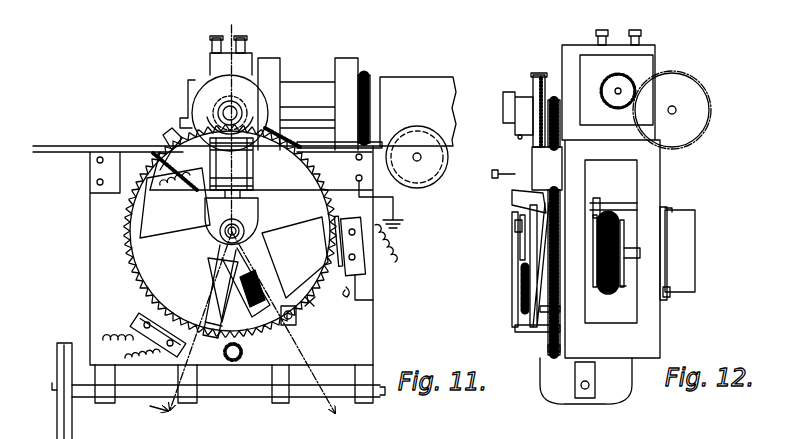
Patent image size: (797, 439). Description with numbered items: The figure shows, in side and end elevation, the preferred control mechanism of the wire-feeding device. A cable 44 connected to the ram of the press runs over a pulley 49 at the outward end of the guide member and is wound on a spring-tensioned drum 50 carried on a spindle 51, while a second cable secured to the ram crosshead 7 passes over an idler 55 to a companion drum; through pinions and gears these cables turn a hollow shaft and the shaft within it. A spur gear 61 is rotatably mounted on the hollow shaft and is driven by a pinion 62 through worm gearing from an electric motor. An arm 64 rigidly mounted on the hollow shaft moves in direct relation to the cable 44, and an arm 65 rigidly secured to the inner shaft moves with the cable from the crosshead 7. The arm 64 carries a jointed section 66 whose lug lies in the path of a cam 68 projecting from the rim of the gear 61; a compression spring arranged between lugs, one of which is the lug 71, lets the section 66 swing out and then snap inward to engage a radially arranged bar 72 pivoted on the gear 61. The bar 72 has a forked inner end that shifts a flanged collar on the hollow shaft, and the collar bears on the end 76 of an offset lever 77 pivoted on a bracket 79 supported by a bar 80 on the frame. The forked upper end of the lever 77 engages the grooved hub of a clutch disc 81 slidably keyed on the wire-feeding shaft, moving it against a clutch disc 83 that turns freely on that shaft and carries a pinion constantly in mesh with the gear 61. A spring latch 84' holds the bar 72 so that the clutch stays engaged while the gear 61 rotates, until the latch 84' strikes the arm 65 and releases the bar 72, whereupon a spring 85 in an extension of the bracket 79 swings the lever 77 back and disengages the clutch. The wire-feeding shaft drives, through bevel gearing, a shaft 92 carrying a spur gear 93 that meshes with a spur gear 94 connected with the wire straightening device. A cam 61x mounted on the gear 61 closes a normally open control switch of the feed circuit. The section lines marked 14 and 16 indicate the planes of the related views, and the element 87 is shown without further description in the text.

In FIG. 11, the ram crosshead 7 is at (144, 330).
In FIG. 11, the section line 14 is at (234, 33).
In FIG. 11, the section line 16 is at (153, 414).
In FIG. 12, the cable 44 is at (600, 250).
In FIG. 11, the pulley 49 is at (425, 186).
In FIG. 12, the drum 50 is at (623, 287).
In FIG. 12, the spindle 51 is at (633, 253).
In FIG. 12, the idler 55 is at (599, 200).
In FIG. 11, the spur gear 61 is at (133, 229).
In FIG. 12, the spur gear 61 is at (548, 335).
In FIG. 11, the cam 61x is at (168, 143).
In FIG. 11, the pinion 62 is at (243, 352).
In FIG. 12, the pinion 62 is at (550, 348).
In FIG. 11, the arm 64 is at (243, 266).
In FIG. 12, the arm 64 is at (530, 327).
In FIG. 11, the arm 65 is at (212, 275).
In FIG. 12, the arm 65 is at (515, 258).
In FIG. 12, the jointed section 66 is at (522, 293).
In FIG. 11, the cam 68 is at (333, 302).
In FIG. 12, the cam 68 is at (550, 308).
In FIG. 11, the lug 71 is at (286, 325).
In FIG. 11, the bar 72 is at (270, 292).
In FIG. 12, the end of offset lever 76 is at (535, 242).
In FIG. 12, the offset lever 77 is at (515, 202).
In FIG. 11, the bracket 79 is at (245, 166).
In FIG. 12, the bracket 79 is at (522, 158).
In FIG. 11, the bar 80 is at (334, 165).
In FIG. 11, the clutch disc 81 is at (210, 85).
In FIG. 12, the clutch disc 81 is at (533, 78).
In FIG. 12, the clutch disc 83 is at (545, 75).
In FIG. 11, the spring latch 84' is at (331, 323).
In FIG. 12, the spring 85 is at (494, 174).
In FIG. 11, the bearing 87 is at (197, 106).
In FIG. 12, the bearing 87 is at (503, 108).
In FIG. 12, the shaft 92 is at (677, 113).
In FIG. 12, the spur gear 93 is at (688, 83).
In FIG. 11, the spur gear 94 is at (364, 75).
In FIG. 12, the spur gear 94 is at (627, 78).